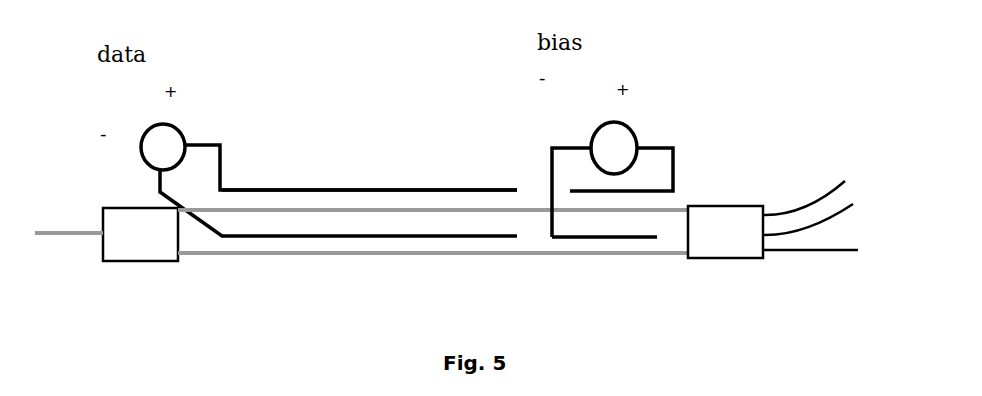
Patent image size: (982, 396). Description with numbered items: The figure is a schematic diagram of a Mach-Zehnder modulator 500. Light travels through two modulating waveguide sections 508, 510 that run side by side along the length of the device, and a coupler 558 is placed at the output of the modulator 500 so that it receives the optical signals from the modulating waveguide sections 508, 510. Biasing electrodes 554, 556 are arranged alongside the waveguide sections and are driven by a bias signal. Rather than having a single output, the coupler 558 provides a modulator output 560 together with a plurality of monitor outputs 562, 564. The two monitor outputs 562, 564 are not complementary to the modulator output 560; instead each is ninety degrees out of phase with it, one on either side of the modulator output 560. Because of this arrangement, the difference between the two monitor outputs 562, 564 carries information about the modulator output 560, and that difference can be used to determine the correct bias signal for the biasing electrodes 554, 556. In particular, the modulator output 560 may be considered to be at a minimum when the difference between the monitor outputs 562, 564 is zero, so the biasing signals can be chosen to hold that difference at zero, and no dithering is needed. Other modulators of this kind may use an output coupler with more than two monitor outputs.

The MZ modulator 500 is at (276, 156).
The modulating waveguide section 508 is at (369, 179).
The modulating waveguide section 510 is at (433, 266).
The biasing electrode 554 is at (612, 169).
The biasing electrode 556 is at (600, 268).
The coupler 558 is at (729, 187).
The modulator output 560 is at (791, 286).
The monitor output 562 is at (860, 208).
The monitor output 564 is at (807, 166).